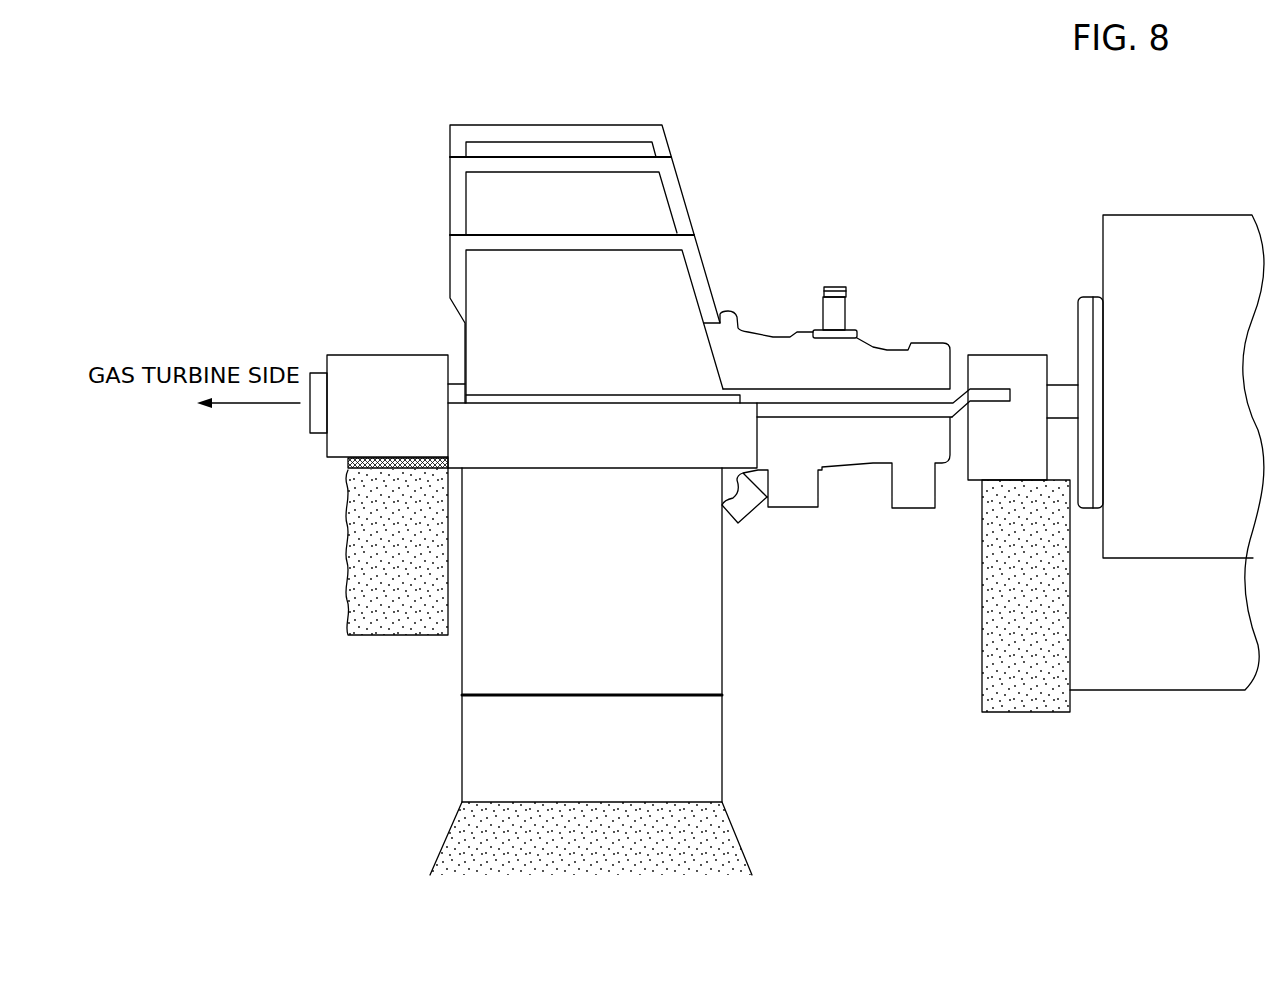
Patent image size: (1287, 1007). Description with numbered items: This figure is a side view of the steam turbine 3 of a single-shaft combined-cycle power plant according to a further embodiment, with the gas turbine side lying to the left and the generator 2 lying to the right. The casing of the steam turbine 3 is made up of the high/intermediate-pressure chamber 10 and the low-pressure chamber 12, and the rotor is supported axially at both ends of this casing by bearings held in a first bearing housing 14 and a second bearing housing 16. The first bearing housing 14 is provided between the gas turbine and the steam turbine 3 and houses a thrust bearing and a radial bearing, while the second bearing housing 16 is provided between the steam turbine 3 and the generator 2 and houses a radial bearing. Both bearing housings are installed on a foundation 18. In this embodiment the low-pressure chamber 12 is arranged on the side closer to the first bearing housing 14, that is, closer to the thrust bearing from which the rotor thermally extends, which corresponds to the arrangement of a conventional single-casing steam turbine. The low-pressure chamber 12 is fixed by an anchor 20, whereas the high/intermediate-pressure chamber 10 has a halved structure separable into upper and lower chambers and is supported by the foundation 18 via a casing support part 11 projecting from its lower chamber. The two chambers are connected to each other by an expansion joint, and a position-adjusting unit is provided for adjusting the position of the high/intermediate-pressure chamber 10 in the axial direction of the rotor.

The generator 2 is at (1176, 215).
The steam turbine 3 is at (553, 234).
The high/intermediate-pressure chamber 10 is at (885, 350).
The casing support part 11 is at (985, 388).
The low-pressure chamber 12 is at (577, 125).
The first bearing housing 14 is at (393, 355).
The second bearing housing 16 is at (1013, 355).
The foundation 18 is at (393, 622).
The anchor 20 is at (442, 842).